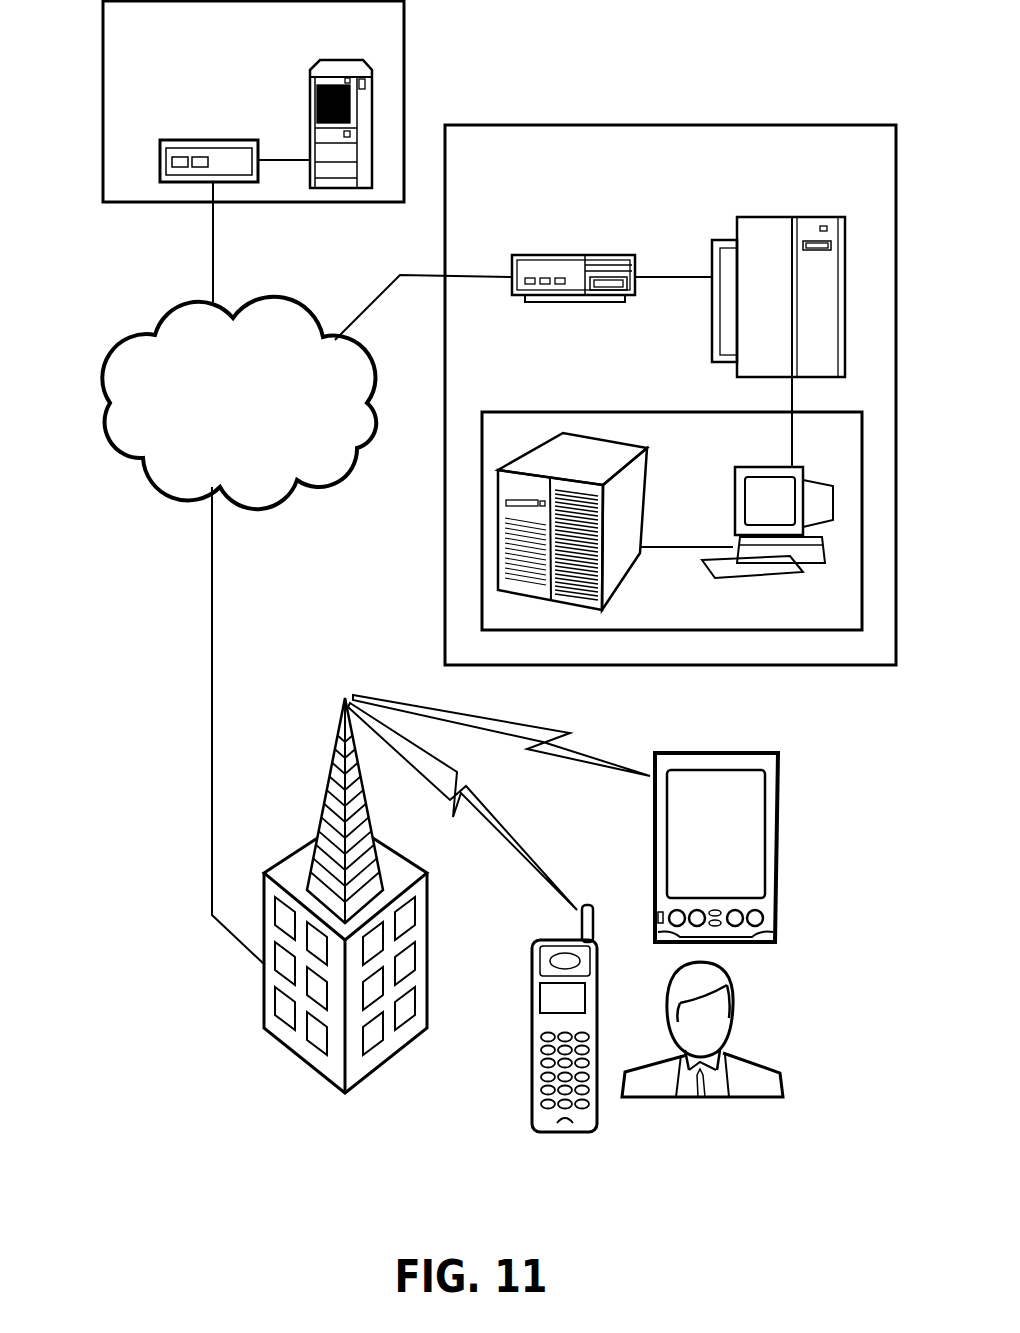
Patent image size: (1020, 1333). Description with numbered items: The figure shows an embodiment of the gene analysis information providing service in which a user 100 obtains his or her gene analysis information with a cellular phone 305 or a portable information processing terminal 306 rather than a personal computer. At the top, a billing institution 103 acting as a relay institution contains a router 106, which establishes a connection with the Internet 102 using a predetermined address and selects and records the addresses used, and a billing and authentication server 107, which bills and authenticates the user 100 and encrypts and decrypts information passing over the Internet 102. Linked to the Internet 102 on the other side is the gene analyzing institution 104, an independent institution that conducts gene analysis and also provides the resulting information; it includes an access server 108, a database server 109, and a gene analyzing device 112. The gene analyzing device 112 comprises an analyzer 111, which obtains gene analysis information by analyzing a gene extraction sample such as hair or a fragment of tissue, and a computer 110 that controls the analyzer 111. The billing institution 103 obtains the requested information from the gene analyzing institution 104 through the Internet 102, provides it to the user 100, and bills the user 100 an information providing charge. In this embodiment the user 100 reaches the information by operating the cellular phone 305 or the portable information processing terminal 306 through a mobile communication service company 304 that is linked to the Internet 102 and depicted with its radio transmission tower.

The user 100 is at (757, 1065).
The Internet 102 is at (221, 429).
The billing institution 103 is at (102, 54).
The gene analyzing institution 104 is at (700, 125).
The router 106 is at (205, 140).
The billing and authentication server 107 is at (333, 62).
The access server 108 is at (550, 255).
The database server 109 is at (712, 312).
The computer 110 is at (768, 467).
The analyzer 111 is at (644, 483).
The gene analyzing device 112 is at (625, 411).
The mobile communication service company 304 is at (290, 1048).
The cellular phone 305 is at (532, 1052).
The portable information processing terminal 306 is at (778, 850).